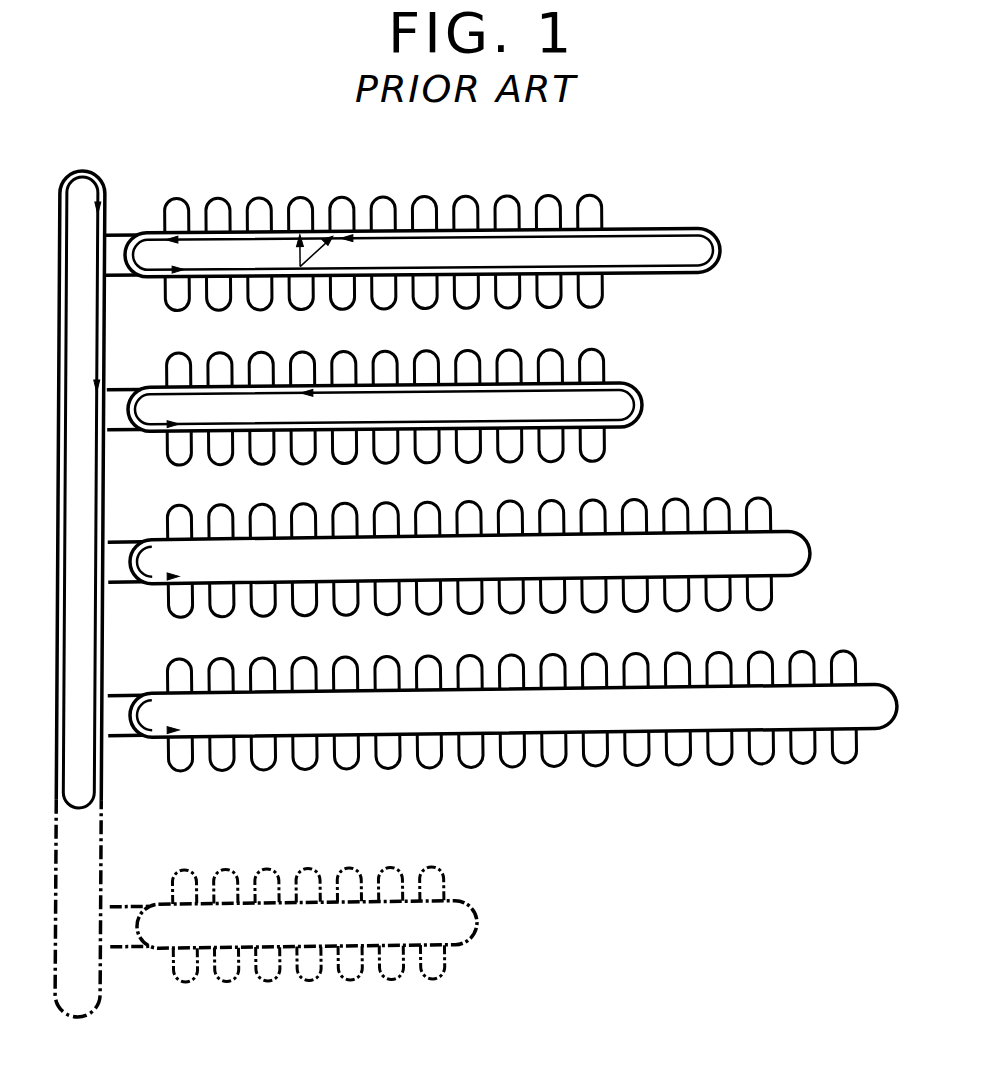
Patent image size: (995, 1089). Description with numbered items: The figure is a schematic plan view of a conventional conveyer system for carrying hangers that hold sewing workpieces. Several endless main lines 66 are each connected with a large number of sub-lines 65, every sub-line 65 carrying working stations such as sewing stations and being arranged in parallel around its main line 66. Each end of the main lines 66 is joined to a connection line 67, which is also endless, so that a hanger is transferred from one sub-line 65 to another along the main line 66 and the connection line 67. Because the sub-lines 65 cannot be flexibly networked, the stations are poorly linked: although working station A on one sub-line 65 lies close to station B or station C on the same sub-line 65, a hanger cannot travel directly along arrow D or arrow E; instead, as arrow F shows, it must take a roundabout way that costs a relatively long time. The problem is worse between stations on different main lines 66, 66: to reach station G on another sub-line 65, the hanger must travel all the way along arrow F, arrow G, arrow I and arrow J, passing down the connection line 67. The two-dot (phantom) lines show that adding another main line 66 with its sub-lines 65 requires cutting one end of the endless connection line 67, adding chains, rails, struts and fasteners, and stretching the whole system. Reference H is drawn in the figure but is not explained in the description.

The sub-line 65 is at (290, 201).
The main line 66 is at (703, 231).
The connection line 67 is at (63, 170).
The working station A is at (305, 255).
The working station B is at (340, 201).
The working station C is at (310, 200).
The arrow D is at (320, 253).
The arrow E is at (298, 263).
The arrow F is at (718, 258).
The working station G is at (316, 353).
The refrigerant flow point H is at (197, 238).
The arrow I is at (100, 330).
The arrow J is at (363, 430).